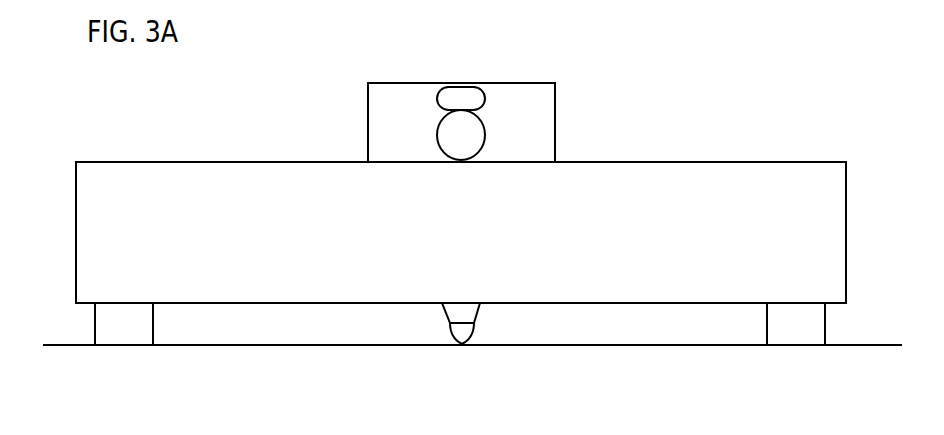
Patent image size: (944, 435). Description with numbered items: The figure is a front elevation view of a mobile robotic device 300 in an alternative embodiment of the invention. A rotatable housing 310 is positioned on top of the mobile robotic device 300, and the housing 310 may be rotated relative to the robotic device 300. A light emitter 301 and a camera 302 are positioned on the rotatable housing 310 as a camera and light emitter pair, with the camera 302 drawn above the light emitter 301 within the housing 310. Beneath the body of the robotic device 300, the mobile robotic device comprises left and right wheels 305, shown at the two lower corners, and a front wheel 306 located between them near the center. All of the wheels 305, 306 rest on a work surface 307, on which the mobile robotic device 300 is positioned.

The robotic device 300 is at (747, 162).
The light emitter 301 is at (437, 135).
The camera 302 is at (437, 98).
The left and right wheels 305 is at (95, 328).
The front wheel 306 is at (474, 333).
The work surface 307 is at (217, 345).
The rotatable housing 310 is at (555, 102).